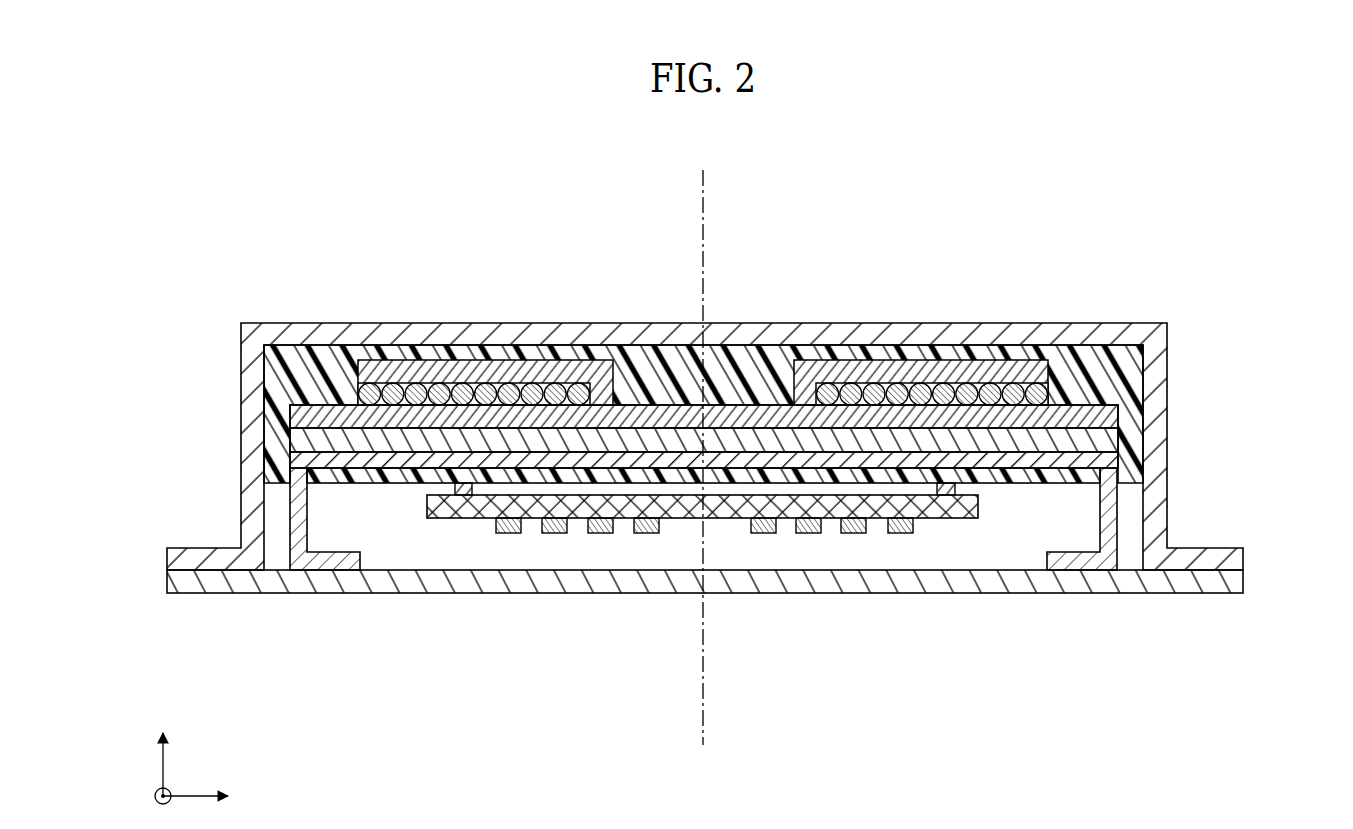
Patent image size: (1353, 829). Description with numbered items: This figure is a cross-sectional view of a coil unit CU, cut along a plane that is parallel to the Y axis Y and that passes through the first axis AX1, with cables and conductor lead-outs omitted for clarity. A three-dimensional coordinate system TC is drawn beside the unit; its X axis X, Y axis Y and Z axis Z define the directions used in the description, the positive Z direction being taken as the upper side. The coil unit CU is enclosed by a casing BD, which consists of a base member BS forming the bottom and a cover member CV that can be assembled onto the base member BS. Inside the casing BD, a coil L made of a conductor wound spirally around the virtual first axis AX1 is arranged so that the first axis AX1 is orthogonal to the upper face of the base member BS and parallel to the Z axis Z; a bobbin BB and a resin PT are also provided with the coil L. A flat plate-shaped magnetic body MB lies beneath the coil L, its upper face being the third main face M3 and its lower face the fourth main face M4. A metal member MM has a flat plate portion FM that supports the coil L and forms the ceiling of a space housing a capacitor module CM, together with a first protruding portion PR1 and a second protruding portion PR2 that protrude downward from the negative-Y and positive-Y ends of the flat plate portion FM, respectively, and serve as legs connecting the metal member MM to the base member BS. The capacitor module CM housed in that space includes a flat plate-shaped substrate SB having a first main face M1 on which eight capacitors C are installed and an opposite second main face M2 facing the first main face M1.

The first axis AX1 is at (705, 192).
The coil unit CU is at (894, 243).
The casing BD is at (1180, 473).
The cover member CV is at (1098, 323).
The base member BS is at (580, 587).
The resin PT is at (650, 360).
The third main face M3 is at (310, 419).
The fourth main face M4 is at (311, 457).
The coil L is at (425, 390).
The bobbin BB is at (945, 370).
The metal member MM is at (701, 466).
The magnetic body MB is at (750, 430).
The flat plate portion FM is at (1075, 458).
The first protruding portion PR1 is at (298, 525).
The second protruding portion PR2 is at (1112, 532).
The capacitor module CM is at (735, 589).
The substrate SB is at (940, 507).
The first main face M1 is at (443, 525).
The second main face M2 is at (687, 466).
The capacitor C is at (509, 534).
The three-dimensional coordinate system TC is at (195, 755).
The X axis X is at (181, 777).
The Y axis Y is at (208, 797).
The Z axis Z is at (163, 747).